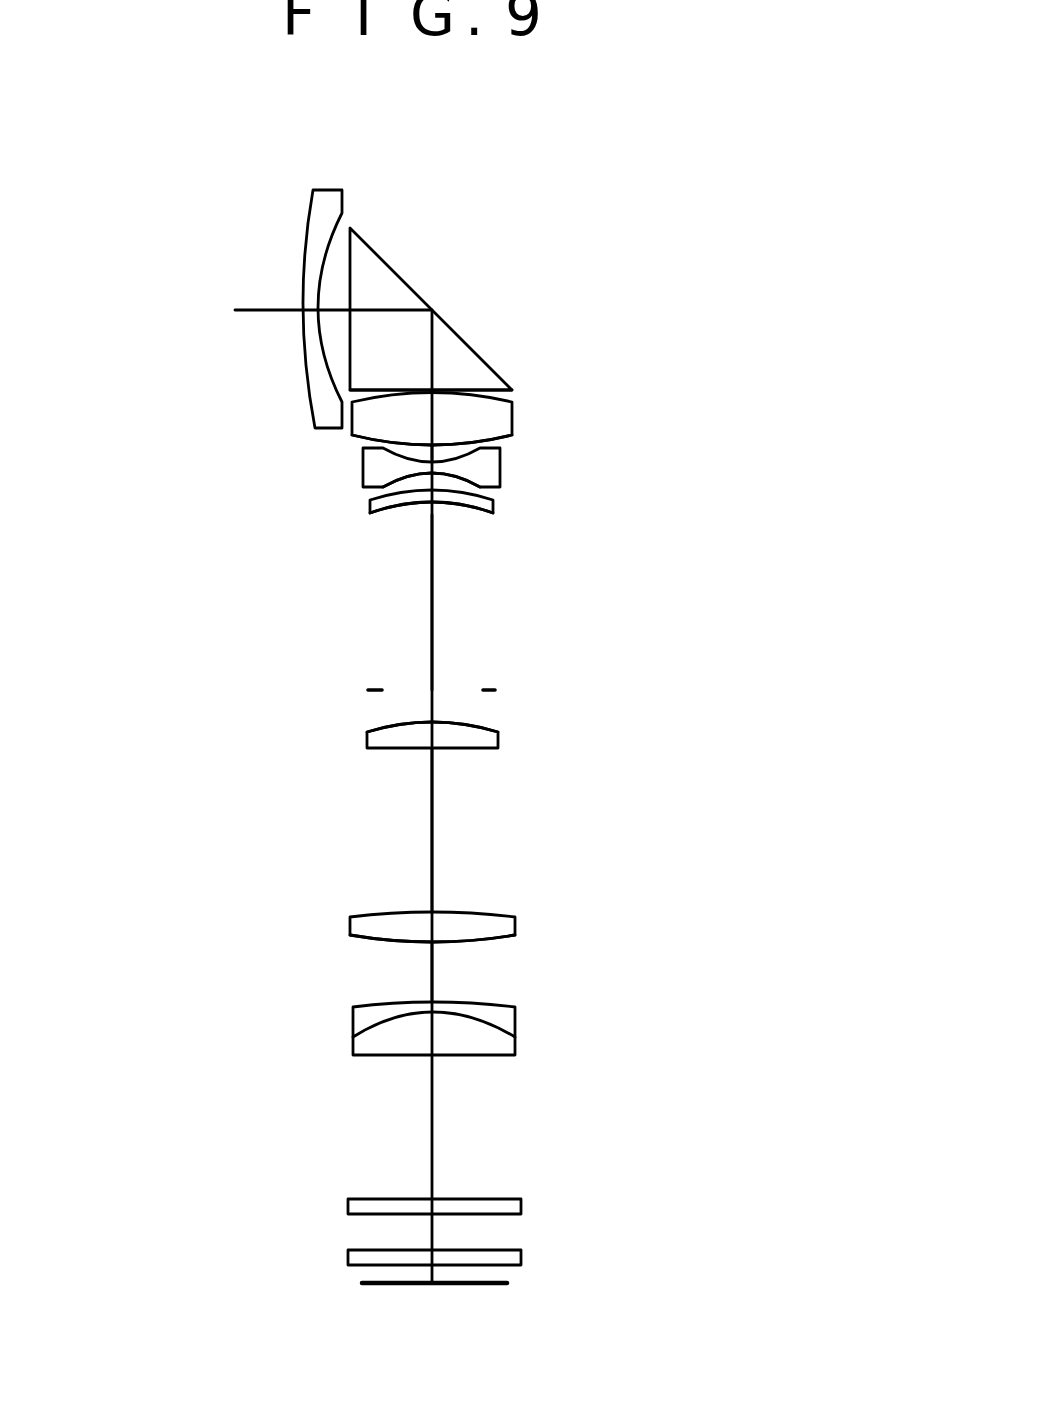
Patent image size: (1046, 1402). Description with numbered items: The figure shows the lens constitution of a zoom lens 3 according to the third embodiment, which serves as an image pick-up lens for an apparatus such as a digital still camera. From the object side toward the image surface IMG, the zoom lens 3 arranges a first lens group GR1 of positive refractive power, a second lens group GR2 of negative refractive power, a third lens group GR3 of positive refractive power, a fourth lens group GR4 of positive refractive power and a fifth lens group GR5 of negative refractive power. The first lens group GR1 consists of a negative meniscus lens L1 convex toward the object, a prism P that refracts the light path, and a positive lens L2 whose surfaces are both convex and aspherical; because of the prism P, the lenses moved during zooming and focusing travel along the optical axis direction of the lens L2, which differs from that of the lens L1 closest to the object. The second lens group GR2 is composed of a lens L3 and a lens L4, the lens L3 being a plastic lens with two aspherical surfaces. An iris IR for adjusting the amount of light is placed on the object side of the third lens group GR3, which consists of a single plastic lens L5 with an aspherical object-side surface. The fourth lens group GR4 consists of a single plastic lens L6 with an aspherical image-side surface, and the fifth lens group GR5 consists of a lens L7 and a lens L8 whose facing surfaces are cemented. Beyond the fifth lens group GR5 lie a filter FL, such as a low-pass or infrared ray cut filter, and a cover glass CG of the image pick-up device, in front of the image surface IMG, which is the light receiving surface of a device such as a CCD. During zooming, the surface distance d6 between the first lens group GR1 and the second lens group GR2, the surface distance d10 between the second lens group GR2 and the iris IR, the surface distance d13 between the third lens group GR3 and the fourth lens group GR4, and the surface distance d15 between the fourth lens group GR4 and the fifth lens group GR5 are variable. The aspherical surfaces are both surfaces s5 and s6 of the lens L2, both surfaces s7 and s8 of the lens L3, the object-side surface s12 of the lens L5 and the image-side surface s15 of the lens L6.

The zoom lens 3 is at (208, 278).
The first lens group GR1 is at (740, 183).
The second lens group GR2 is at (740, 397).
The third lens group GR3 is at (742, 624).
The fourth lens group GR4 is at (742, 860).
The fifth lens group GR5 is at (742, 977).
The lens L1 is at (343, 203).
The lens L2 is at (513, 412).
The lens L3 is at (500, 462).
The lens L4 is at (493, 507).
The lens L5 is at (498, 739).
The lens L6 is at (517, 925).
The lens L7 is at (516, 1018).
The lens L8 is at (516, 1046).
The prism P is at (396, 273).
The surface s5 is at (463, 390).
The surface s6 is at (360, 442).
The surface s7 is at (446, 462).
The surface s8 is at (413, 476).
The surface s12 is at (387, 729).
The surface s15 is at (478, 942).
The surface distance d6 is at (368, 469).
The surface distance d10 is at (432, 563).
The surface distance d13 is at (432, 810).
The surface distance d15 is at (432, 975).
The iris IR is at (494, 690).
The filter FL is at (520, 1206).
The cover glass CG is at (520, 1258).
The image surface IMG is at (381, 1283).